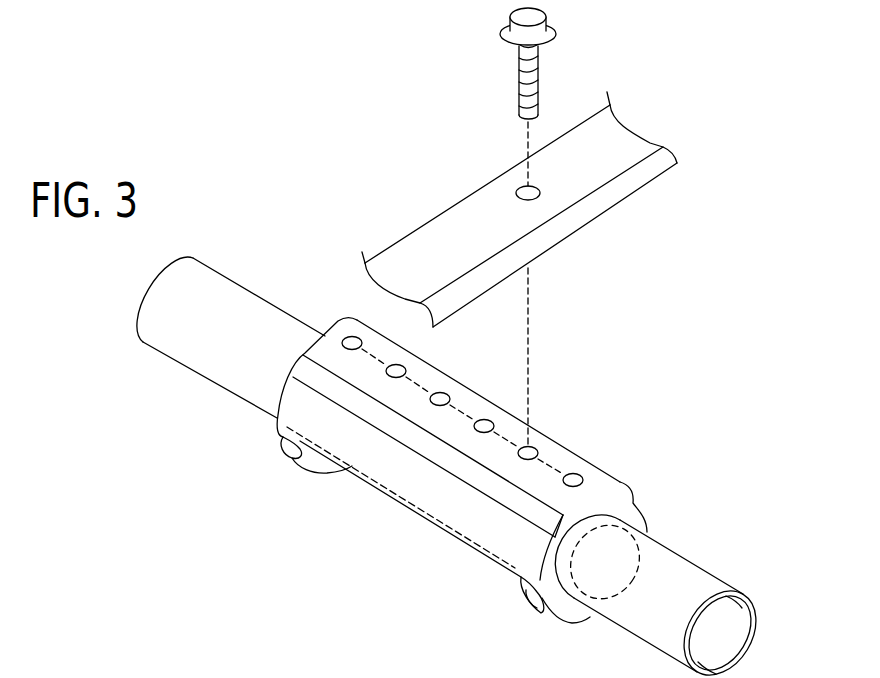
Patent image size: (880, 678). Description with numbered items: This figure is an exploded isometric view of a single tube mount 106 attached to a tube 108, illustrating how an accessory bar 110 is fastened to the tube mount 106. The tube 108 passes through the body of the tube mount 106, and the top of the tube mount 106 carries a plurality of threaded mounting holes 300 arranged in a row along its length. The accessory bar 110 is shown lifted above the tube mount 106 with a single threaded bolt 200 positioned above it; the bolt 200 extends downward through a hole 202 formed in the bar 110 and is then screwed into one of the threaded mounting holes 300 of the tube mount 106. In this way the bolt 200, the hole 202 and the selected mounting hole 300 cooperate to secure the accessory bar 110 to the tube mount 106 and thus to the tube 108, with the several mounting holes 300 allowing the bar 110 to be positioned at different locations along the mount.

The tube mount 106 is at (603, 468).
The tube 108 is at (679, 554).
The accessory bar 110 is at (573, 238).
The threaded bolt 200 is at (512, 30).
The hole 202 is at (521, 187).
The threaded mounting holes 300 is at (441, 392).